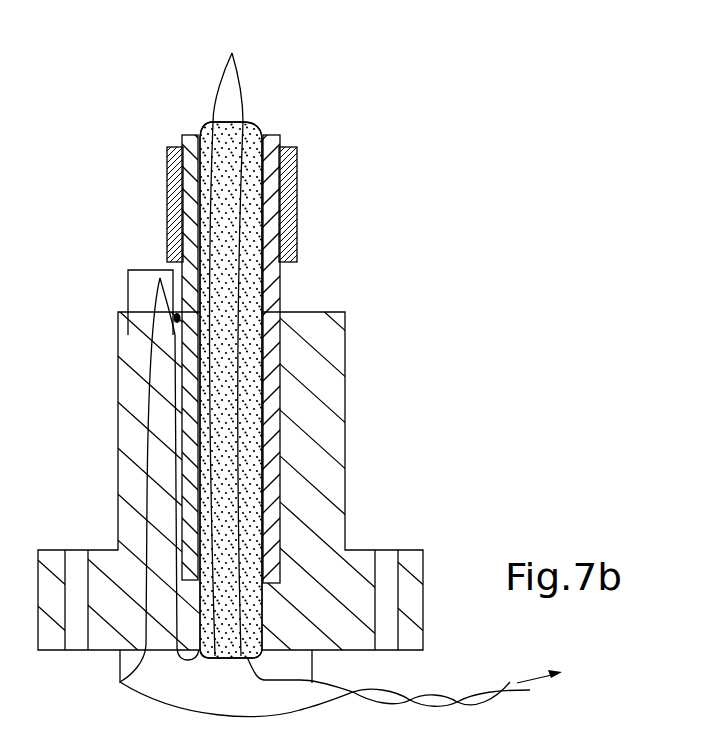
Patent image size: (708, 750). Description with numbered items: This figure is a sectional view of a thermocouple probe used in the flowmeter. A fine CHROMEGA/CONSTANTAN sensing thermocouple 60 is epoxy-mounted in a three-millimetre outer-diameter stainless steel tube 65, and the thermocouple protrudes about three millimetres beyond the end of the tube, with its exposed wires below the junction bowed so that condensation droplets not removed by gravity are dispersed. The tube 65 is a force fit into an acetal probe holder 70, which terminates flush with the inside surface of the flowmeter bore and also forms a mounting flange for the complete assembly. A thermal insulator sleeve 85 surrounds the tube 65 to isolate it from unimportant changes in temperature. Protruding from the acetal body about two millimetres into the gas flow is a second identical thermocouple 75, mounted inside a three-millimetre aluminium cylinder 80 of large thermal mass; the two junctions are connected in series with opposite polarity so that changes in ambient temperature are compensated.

The sensing thermocouple 60 is at (233, 56).
The stainless steel tube 65 is at (270, 136).
The acetal probe holder 70 is at (344, 423).
The second thermocouple 75 is at (155, 288).
The aluminium cylinder 80 is at (128, 293).
The thermal insulator sleeve 85 is at (297, 187).